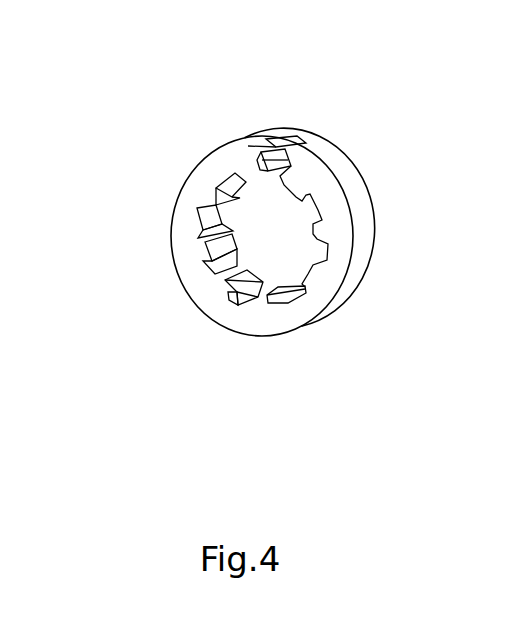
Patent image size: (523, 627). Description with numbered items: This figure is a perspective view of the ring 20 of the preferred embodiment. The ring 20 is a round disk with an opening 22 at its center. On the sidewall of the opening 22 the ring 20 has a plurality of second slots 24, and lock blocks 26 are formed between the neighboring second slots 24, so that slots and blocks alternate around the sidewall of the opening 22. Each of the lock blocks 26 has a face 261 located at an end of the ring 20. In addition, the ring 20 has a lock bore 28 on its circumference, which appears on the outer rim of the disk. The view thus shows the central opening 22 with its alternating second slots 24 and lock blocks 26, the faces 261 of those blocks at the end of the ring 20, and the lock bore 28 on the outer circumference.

The ring 20 is at (336, 157).
The opening 22 is at (258, 212).
The second slots 24 is at (201, 270).
The lock blocks 26 is at (248, 282).
The face 261 is at (227, 293).
The lock bore 28 is at (283, 138).